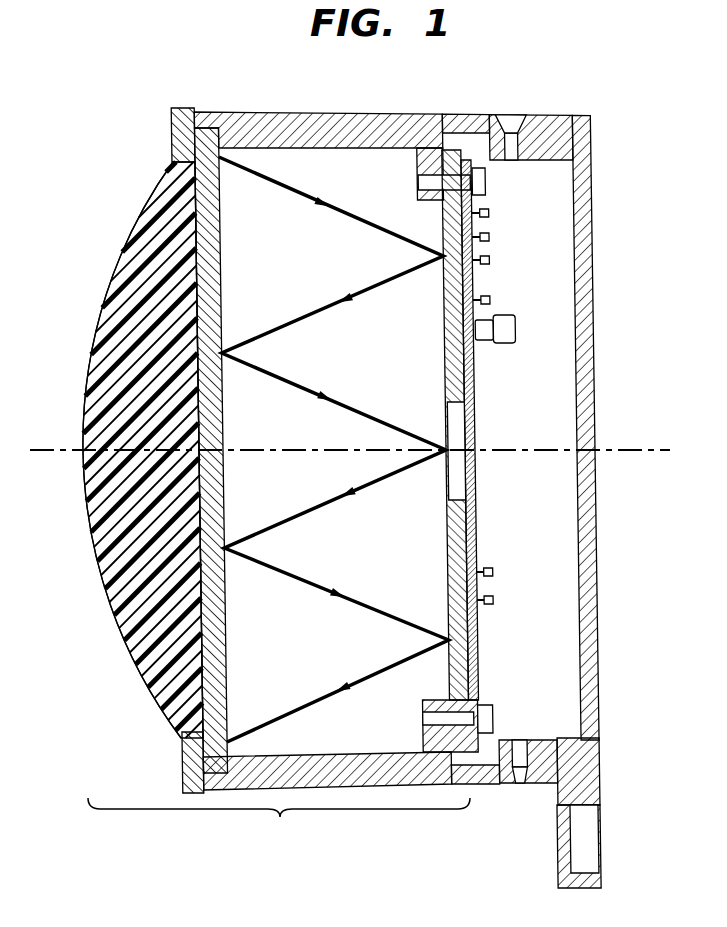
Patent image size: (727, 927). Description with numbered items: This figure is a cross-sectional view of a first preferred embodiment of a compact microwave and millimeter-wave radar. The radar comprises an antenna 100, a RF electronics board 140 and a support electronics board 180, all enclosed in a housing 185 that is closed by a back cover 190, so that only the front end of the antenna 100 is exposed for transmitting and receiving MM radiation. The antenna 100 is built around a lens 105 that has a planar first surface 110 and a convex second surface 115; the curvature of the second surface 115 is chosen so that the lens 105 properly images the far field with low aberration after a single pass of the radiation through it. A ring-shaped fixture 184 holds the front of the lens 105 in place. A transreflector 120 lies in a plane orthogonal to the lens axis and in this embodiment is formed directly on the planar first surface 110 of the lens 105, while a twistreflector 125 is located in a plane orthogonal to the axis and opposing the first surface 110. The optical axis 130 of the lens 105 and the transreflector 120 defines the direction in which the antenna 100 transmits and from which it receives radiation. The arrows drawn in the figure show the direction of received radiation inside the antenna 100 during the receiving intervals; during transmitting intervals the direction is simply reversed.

The antenna 100 is at (279, 825).
The lens 105 is at (115, 546).
The planar first surface 110 is at (200, 655).
The convex second surface 115 is at (107, 307).
The transreflector 120 is at (225, 609).
The twistreflector 125 is at (446, 589).
The optical axis 130 is at (636, 449).
The RF electronics board 140 is at (473, 487).
The support electronics board 180 is at (478, 633).
The ring-shaped fixture 184 is at (172, 135).
The housing 185 is at (318, 112).
The back cover 190 is at (598, 668).